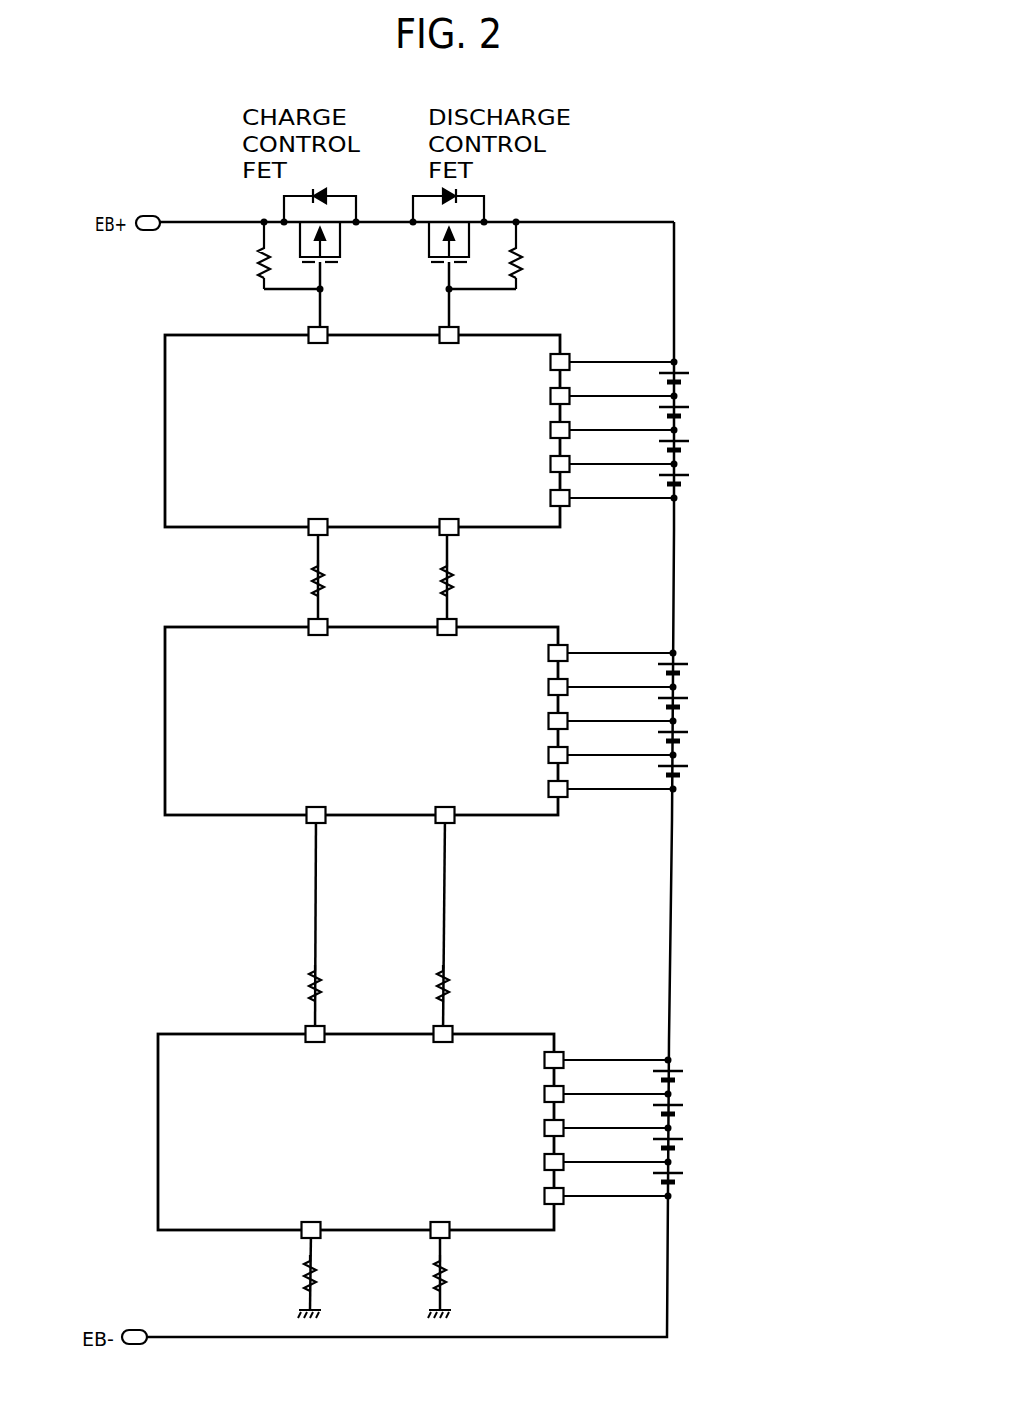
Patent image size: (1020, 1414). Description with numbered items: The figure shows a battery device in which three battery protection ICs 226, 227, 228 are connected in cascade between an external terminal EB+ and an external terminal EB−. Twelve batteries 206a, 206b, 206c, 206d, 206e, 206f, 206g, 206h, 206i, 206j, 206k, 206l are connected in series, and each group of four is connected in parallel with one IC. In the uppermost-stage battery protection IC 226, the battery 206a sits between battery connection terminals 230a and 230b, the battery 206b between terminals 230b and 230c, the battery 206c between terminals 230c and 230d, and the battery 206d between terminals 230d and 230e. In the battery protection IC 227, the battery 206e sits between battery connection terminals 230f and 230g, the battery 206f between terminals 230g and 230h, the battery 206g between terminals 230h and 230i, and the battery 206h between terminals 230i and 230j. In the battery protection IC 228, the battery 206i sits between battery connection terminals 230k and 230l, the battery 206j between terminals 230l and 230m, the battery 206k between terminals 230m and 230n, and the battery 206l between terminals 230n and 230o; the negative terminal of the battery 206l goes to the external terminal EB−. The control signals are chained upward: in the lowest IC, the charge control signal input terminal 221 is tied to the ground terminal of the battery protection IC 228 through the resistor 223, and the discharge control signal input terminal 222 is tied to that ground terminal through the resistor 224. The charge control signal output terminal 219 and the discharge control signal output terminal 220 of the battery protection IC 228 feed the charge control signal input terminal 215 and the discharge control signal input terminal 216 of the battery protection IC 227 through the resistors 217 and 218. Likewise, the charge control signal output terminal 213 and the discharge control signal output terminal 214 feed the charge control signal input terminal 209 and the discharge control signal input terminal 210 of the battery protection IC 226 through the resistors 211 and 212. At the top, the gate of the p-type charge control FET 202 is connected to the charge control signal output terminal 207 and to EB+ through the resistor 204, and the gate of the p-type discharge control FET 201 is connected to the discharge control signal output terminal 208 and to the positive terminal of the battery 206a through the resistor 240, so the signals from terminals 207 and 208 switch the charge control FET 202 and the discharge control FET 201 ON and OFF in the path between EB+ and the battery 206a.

The discharge control FET 201 is at (528, 217).
The charge control FET 202 is at (263, 219).
The resistor 204 is at (200, 272).
The resistor 240 is at (576, 255).
The charge control signal output terminal 207 is at (194, 369).
The discharge control signal output terminal 208 is at (542, 322).
The charge control signal input terminal 209 is at (203, 550).
The discharge control signal input terminal 210 is at (552, 539).
The resistor 211 is at (197, 594).
The resistor 212 is at (553, 580).
The charge control signal output terminal 213 is at (194, 653).
The discharge control signal output terminal 214 is at (599, 611).
The charge control signal input terminal 215 is at (194, 839).
The discharge control signal input terminal 216 is at (601, 834).
The resistor 217 is at (193, 970).
The resistor 218 is at (599, 966).
The charge control signal output terminal 219 is at (195, 1021).
The discharge control signal output terminal 220 is at (598, 1011).
The charge control signal input terminal 221 is at (189, 1246).
The discharge control signal input terminal 222 is at (598, 1249).
The resistor 223 is at (250, 1286).
The resistor 224 is at (503, 1286).
The battery protection IC 226 is at (310, 431).
The battery protection IC 227 is at (309, 721).
The battery protection IC 228 is at (303, 1132).
The battery 206a is at (726, 361).
The battery 206b is at (726, 395).
The battery 206c is at (726, 429).
The battery 206d is at (726, 463).
The battery 206e is at (725, 652).
The battery 206f is at (725, 686).
The battery 206g is at (725, 720).
The battery 206h is at (725, 754).
The battery 206i is at (721, 1060).
The battery 206j is at (721, 1094).
The battery 206k is at (721, 1128).
The battery 206l is at (721, 1162).
The battery connection terminal 230a is at (551, 362).
The battery connection terminal 230b is at (551, 396).
The battery connection terminal 230c is at (551, 430).
The battery connection terminal 230d is at (551, 464).
The battery connection terminal 230e is at (551, 498).
The battery connection terminal 230f is at (549, 653).
The battery connection terminal 230g is at (549, 687).
The battery connection terminal 230h is at (549, 721).
The battery connection terminal 230i is at (549, 755).
The battery connection terminal 230j is at (549, 789).
The battery connection terminal 230k is at (545, 1060).
The battery connection terminal 230l is at (545, 1094).
The battery connection terminal 230m is at (545, 1128).
The battery connection terminal 230n is at (545, 1162).
The battery connection terminal 230o is at (545, 1196).